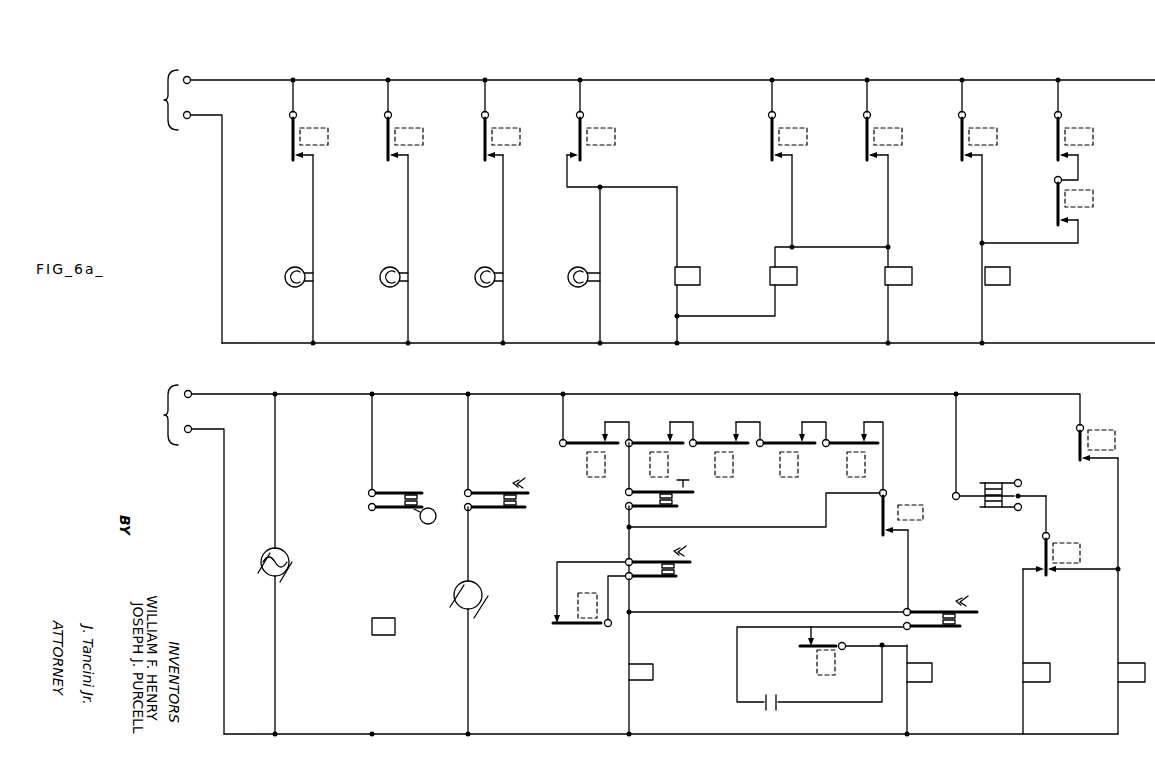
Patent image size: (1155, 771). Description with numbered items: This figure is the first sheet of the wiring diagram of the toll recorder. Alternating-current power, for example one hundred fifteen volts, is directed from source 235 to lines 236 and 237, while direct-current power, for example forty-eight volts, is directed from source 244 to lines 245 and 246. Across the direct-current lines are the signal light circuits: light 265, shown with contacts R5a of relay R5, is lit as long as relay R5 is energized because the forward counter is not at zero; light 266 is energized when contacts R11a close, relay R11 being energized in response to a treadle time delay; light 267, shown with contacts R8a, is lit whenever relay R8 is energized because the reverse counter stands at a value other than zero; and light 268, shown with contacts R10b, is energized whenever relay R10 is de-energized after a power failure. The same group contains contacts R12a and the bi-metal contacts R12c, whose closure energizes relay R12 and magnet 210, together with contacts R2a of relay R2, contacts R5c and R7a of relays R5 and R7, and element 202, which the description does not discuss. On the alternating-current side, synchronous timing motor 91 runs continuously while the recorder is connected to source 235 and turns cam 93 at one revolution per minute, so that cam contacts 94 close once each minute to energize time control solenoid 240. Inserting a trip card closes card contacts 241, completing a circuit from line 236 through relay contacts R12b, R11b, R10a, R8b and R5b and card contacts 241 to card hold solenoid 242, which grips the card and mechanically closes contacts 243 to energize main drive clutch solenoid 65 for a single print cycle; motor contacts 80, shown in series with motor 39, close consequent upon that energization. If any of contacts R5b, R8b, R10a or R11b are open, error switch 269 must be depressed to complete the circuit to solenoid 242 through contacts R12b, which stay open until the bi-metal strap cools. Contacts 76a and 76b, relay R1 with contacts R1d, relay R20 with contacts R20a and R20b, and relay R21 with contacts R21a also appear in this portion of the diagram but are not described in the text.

The source 244 is at (172, 206).
The line 245 is at (250, 80).
The line 246 is at (265, 343).
The source 235 is at (173, 559).
The line 236 is at (334, 394).
The line 237 is at (242, 734).
The light 265 is at (297, 272).
The light 266 is at (392, 272).
The light 267 is at (487, 272).
The light 268 is at (579, 272).
The relay coil 202 is at (688, 267).
The magnet 210 is at (785, 285).
The synchronous timing motor 91 is at (288, 552).
The single lobe cam 93 is at (422, 523).
The timer contacts 94 is at (424, 503).
The motor contacts 80 is at (526, 506).
The motor 39 is at (480, 587).
The time control solenoid 240 is at (384, 635).
The error switch 269 is at (680, 504).
The card contacts 241 is at (678, 573).
The card hold solenoid 242 is at (642, 684).
The contacts 243 is at (965, 624).
The main drive clutch solenoid 65 is at (922, 683).
The limit switch contact 76a is at (976, 483).
The limit switch contact 76b is at (982, 518).
The relay R1 is at (907, 505).
The relay R1 contact d R1d is at (885, 536).
The relay R2 is at (978, 128).
The relay R2 contact a R2a is at (966, 160).
The relay R5 is at (311, 128).
The relay R5 contact a R5a is at (297, 160).
The contacts R5b is at (846, 430).
The relay R5 contact c R5c is at (1055, 158).
The relay R7 is at (1096, 199).
The relay R7 contact a R7a is at (1057, 213).
The relay R8 is at (501, 128).
The relay R8 contact a R8a is at (489, 160).
The contacts R8b is at (781, 430).
The relay R10 is at (596, 128).
The contacts R10a is at (715, 430).
The relay R10 contact b R10b is at (583, 160).
The relay R11 is at (405, 128).
The contacts R11a is at (392, 160).
The contacts R11b is at (651, 430).
The relay R12 is at (788, 128).
The relay R12 contact a R12a is at (776, 160).
The contacts R12b is at (586, 430).
The bi-metal contacts R12c is at (871, 160).
The relay R20 is at (589, 593).
The relay R20 contact a R20a is at (552, 622).
The relay R20 contact b R20b is at (1082, 465).
The relay R21 is at (1063, 543).
The relay R21 contact a R21a is at (1050, 575).